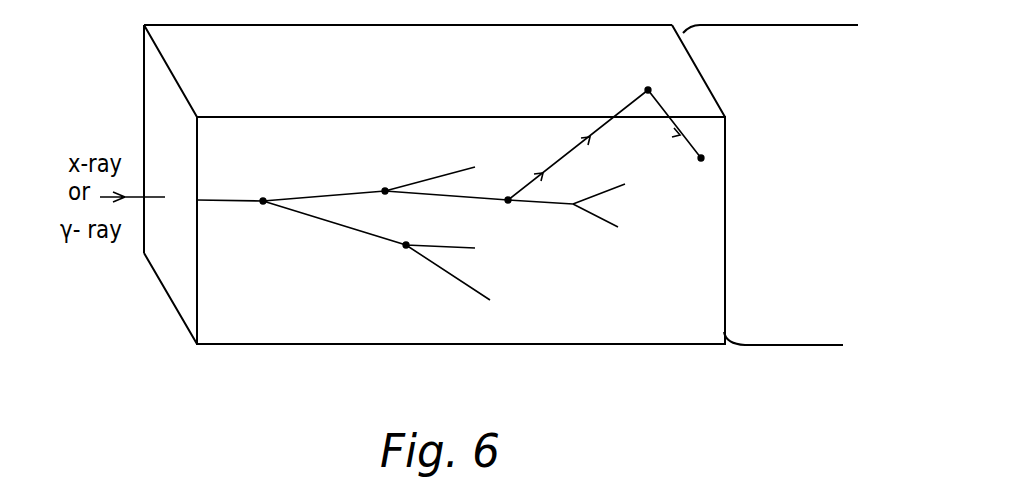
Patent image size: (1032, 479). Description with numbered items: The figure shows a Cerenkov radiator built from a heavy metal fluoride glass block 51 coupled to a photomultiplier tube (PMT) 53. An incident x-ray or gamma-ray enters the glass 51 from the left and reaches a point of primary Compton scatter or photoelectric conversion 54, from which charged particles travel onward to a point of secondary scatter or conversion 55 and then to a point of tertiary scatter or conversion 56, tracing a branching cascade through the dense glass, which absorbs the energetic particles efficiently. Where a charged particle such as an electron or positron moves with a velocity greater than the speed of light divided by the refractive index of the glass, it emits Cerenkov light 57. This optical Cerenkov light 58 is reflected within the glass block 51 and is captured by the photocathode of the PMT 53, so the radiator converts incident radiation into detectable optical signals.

The glass scintillator block 51 is at (324, 333).
The photomultiplier tube (PMT) 53 is at (822, 325).
The point of primary Compton scatter or photoelectric conversion 54 is at (263, 201).
The point of secondary scatter or conversion 55 is at (385, 191).
The point of tertiary scatter or conversion 56 is at (573, 204).
The Cerenkov light 57 is at (508, 202).
The reflected optical Cerenkov light 58 is at (648, 90).